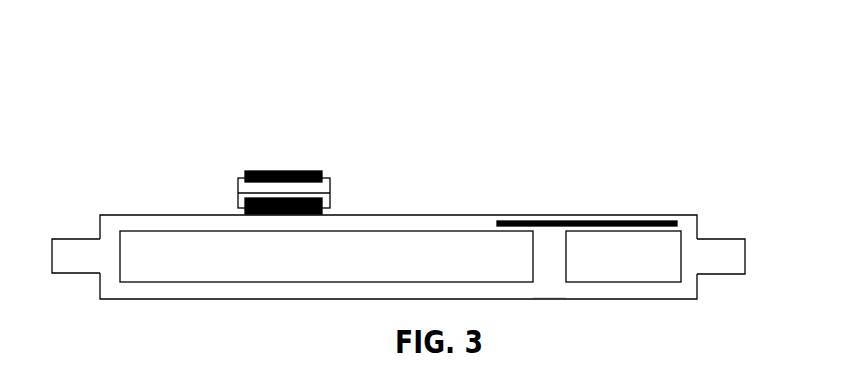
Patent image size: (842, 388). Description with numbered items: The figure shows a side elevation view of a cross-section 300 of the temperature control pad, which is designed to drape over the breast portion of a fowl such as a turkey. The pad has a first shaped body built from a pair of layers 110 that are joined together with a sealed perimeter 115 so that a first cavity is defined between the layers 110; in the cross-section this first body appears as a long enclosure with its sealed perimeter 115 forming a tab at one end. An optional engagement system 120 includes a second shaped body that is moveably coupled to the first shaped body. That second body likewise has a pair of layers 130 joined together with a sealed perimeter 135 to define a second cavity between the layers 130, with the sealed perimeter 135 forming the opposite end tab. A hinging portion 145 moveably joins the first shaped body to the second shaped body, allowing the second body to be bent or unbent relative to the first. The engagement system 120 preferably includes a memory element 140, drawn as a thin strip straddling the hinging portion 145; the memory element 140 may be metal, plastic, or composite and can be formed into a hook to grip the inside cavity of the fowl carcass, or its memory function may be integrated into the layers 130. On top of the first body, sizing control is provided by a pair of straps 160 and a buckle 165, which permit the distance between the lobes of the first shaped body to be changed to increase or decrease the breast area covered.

The cross-section 300 is at (142, 77).
The engagement system 120 is at (507, 144).
The sealed perimeter 115 is at (78, 255).
The sealed perimeter 135 is at (713, 250).
The layers 110 is at (198, 293).
The layers 130 is at (686, 215).
The memory element 140 is at (555, 223).
The hinging portion 145 is at (550, 263).
The straps 160 is at (243, 207).
The buckle 165 is at (323, 185).